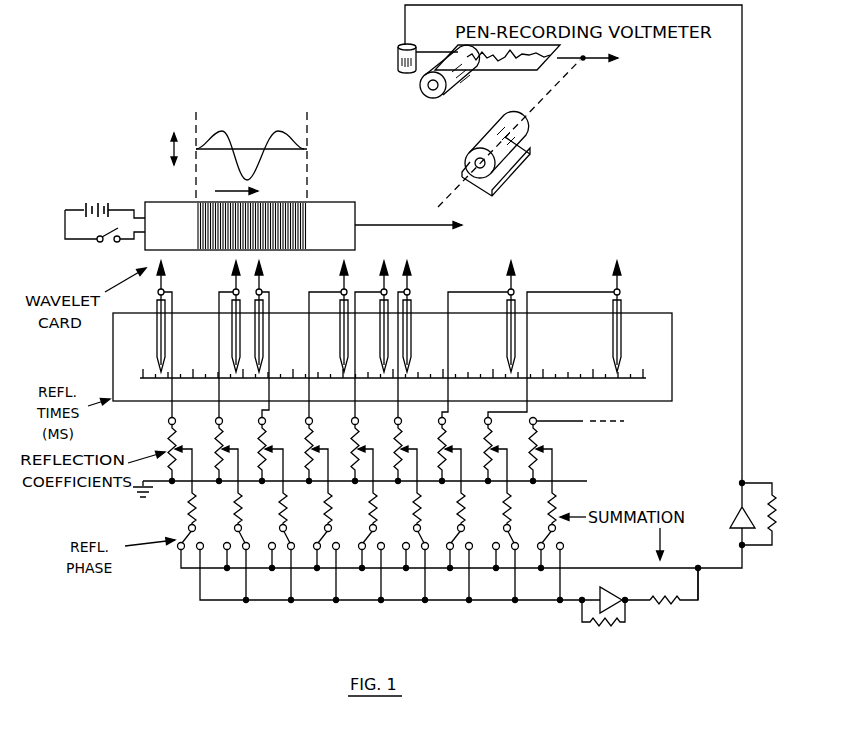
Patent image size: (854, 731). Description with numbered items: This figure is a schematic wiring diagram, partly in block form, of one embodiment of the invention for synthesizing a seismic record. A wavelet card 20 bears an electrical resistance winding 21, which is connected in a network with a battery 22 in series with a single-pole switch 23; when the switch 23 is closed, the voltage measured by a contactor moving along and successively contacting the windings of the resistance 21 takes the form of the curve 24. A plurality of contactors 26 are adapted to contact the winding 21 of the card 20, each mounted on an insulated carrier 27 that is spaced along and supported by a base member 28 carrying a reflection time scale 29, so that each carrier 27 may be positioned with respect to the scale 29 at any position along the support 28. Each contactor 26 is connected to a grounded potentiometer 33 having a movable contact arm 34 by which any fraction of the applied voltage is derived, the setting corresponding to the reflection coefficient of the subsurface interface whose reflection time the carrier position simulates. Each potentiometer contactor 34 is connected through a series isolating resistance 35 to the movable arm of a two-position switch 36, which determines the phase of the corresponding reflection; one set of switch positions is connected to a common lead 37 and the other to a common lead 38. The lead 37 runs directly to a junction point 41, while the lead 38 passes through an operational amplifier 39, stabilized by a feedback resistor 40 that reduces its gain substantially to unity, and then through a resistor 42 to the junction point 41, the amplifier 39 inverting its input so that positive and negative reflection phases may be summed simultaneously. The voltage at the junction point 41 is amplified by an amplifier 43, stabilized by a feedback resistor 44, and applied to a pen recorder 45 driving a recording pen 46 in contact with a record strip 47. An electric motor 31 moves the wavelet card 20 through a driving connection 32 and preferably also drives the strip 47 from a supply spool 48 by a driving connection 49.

The wavelet card 20 is at (337, 202).
The electrical resistance winding 21 is at (300, 222).
The battery 22 is at (98, 206).
The single-pole switch 23 is at (110, 243).
The curve 24 is at (222, 130).
The contactors 26 is at (232, 279).
The insulated carrier 27 is at (232, 302).
The base member 28 is at (672, 353).
The reflection time scale 29 is at (620, 385).
The electric motor 31 is at (530, 135).
The driving connection 32 is at (498, 196).
The grounded potentiometer 33 is at (178, 443).
The movable contact arm 34 is at (236, 447).
The isolating resistance 35 is at (193, 515).
The two-position switch 36 is at (194, 538).
The common lead 37 is at (190, 572).
The common lead 38 is at (270, 602).
The operational amplifier 39 is at (608, 588).
The feedback resistor 40 is at (605, 625).
The junction point 41 is at (700, 573).
The resistor 42 is at (674, 606).
The amplifier 43 is at (735, 523).
The feedback resistor 44 is at (776, 512).
The pen recorder 45 is at (397, 56).
The recording pen 46 is at (466, 72).
The record strip 47 is at (506, 68).
The supply spool 48 is at (420, 86).
The driving connection 49 is at (548, 93).